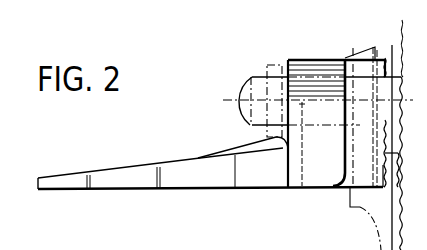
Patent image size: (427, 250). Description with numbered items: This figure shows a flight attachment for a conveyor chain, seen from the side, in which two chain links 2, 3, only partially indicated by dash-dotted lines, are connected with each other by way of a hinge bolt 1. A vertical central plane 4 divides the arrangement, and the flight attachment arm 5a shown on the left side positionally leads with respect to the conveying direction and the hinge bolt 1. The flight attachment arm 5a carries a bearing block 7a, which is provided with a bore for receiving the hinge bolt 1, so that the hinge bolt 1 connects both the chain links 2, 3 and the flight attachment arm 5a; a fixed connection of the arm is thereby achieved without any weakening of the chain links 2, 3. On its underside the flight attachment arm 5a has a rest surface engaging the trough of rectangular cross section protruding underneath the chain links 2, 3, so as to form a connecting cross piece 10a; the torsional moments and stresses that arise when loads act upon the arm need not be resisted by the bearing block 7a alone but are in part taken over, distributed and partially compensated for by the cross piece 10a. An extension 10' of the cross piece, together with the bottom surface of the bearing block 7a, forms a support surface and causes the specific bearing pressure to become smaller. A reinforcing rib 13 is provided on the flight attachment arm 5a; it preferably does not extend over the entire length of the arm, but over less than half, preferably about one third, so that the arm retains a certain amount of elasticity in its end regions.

The hinge bolt 1 is at (251, 82).
The chain link 2 is at (356, 226).
The chain link 3 is at (376, 44).
The vertical central plane 4 is at (402, 33).
The flight attachment arm 5a is at (110, 177).
The bearing block 7a is at (302, 73).
The extension of the cross piece 10' is at (336, 97).
The cross piece 10a is at (347, 188).
The rib 13 is at (250, 152).